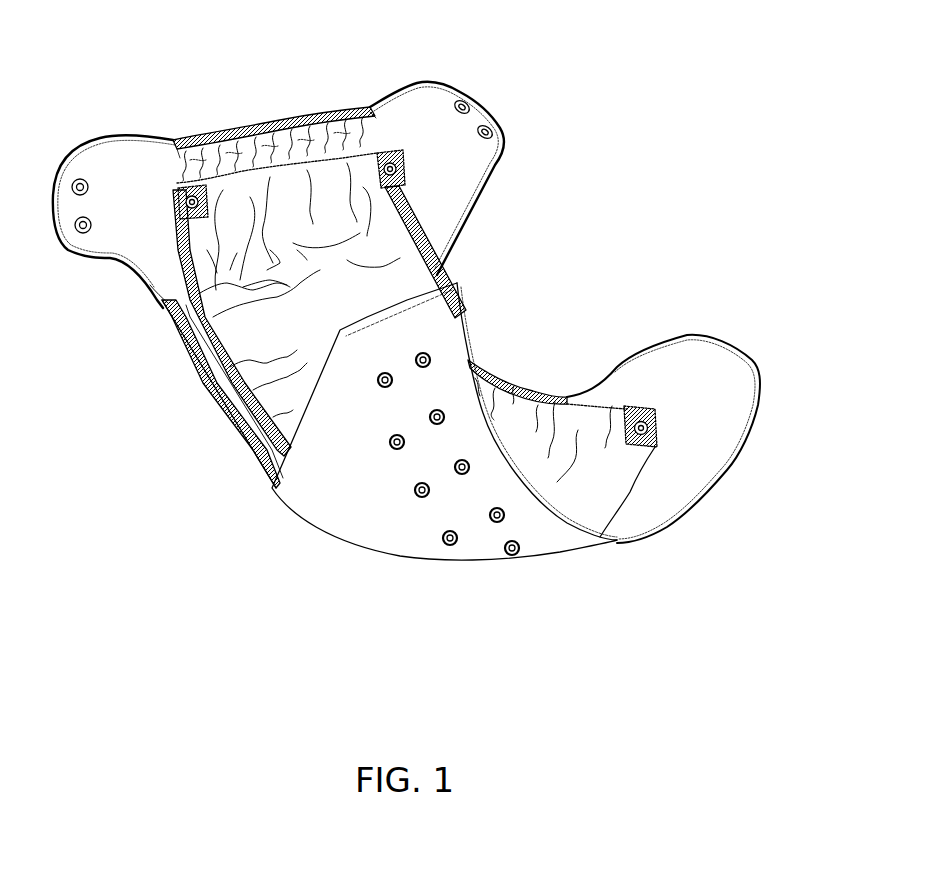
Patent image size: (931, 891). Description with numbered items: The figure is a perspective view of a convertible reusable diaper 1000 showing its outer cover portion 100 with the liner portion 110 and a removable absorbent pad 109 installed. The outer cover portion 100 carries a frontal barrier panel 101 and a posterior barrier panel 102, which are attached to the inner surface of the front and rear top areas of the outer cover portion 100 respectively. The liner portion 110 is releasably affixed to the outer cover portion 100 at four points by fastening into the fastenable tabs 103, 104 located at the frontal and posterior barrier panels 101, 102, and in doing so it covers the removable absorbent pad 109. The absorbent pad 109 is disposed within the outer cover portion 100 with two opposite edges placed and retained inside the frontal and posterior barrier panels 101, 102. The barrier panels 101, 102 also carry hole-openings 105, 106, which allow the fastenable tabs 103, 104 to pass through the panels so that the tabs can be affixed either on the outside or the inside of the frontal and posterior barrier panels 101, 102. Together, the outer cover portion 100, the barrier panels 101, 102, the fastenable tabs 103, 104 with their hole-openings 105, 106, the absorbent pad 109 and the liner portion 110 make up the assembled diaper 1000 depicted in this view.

The convertible reusable diaper 1000 is at (316, 52).
The outer cover portion 100 is at (424, 72).
The frontal barrier panel 101 is at (720, 383).
The posterior barrier panel 102 is at (117, 160).
The fastenable tab 103 is at (633, 418).
The fastenable tab 104 is at (200, 233).
The hole-opening 105 is at (660, 413).
The hole-opening 106 is at (178, 171).
The removable absorbent pad 109 is at (237, 407).
The liner portion 110 is at (520, 417).